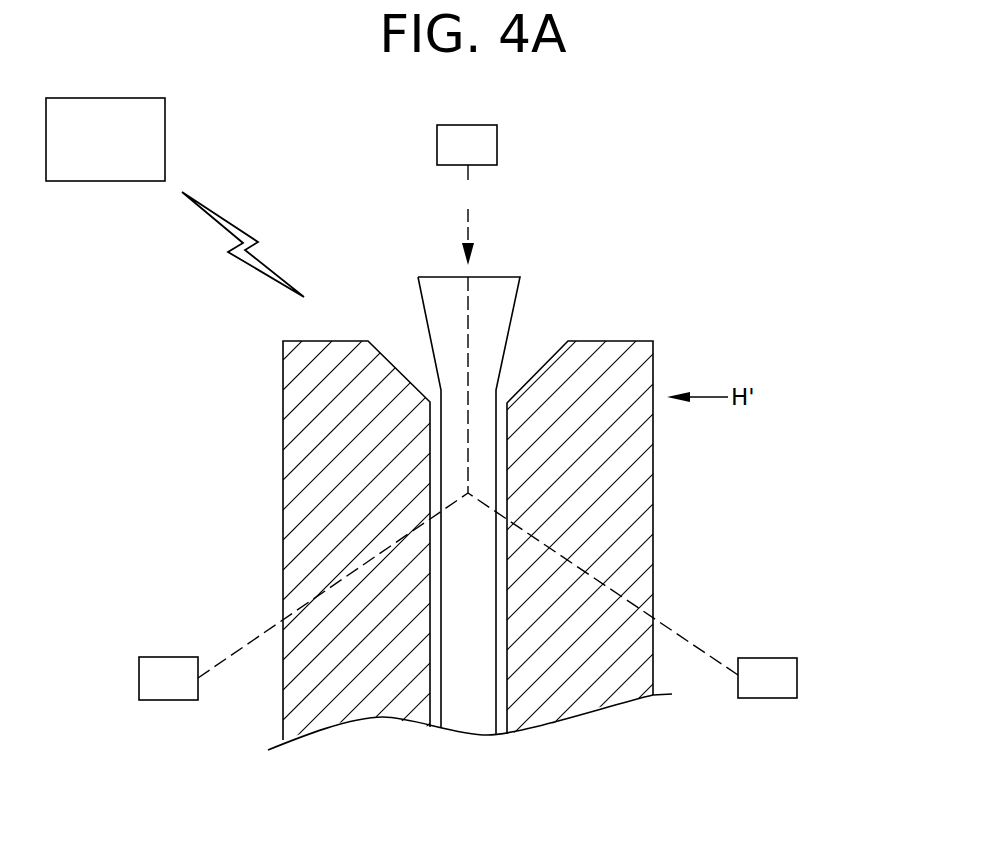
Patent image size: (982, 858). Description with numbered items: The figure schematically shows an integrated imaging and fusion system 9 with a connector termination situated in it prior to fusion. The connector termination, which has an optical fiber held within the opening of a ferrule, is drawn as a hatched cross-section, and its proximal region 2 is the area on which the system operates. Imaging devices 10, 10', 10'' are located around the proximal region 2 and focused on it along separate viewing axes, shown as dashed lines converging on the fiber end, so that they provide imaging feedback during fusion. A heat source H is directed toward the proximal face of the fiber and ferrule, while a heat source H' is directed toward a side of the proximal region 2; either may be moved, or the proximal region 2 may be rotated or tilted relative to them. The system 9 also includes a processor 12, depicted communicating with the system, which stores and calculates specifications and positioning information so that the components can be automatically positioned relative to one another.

The proximal region 2 is at (254, 391).
The integrated imaging and fusion system 9 is at (728, 332).
The imaging device 10 is at (496, 309).
The imaging device 10' is at (664, 595).
The imaging device 10'' is at (268, 596).
The processor 12 is at (165, 139).